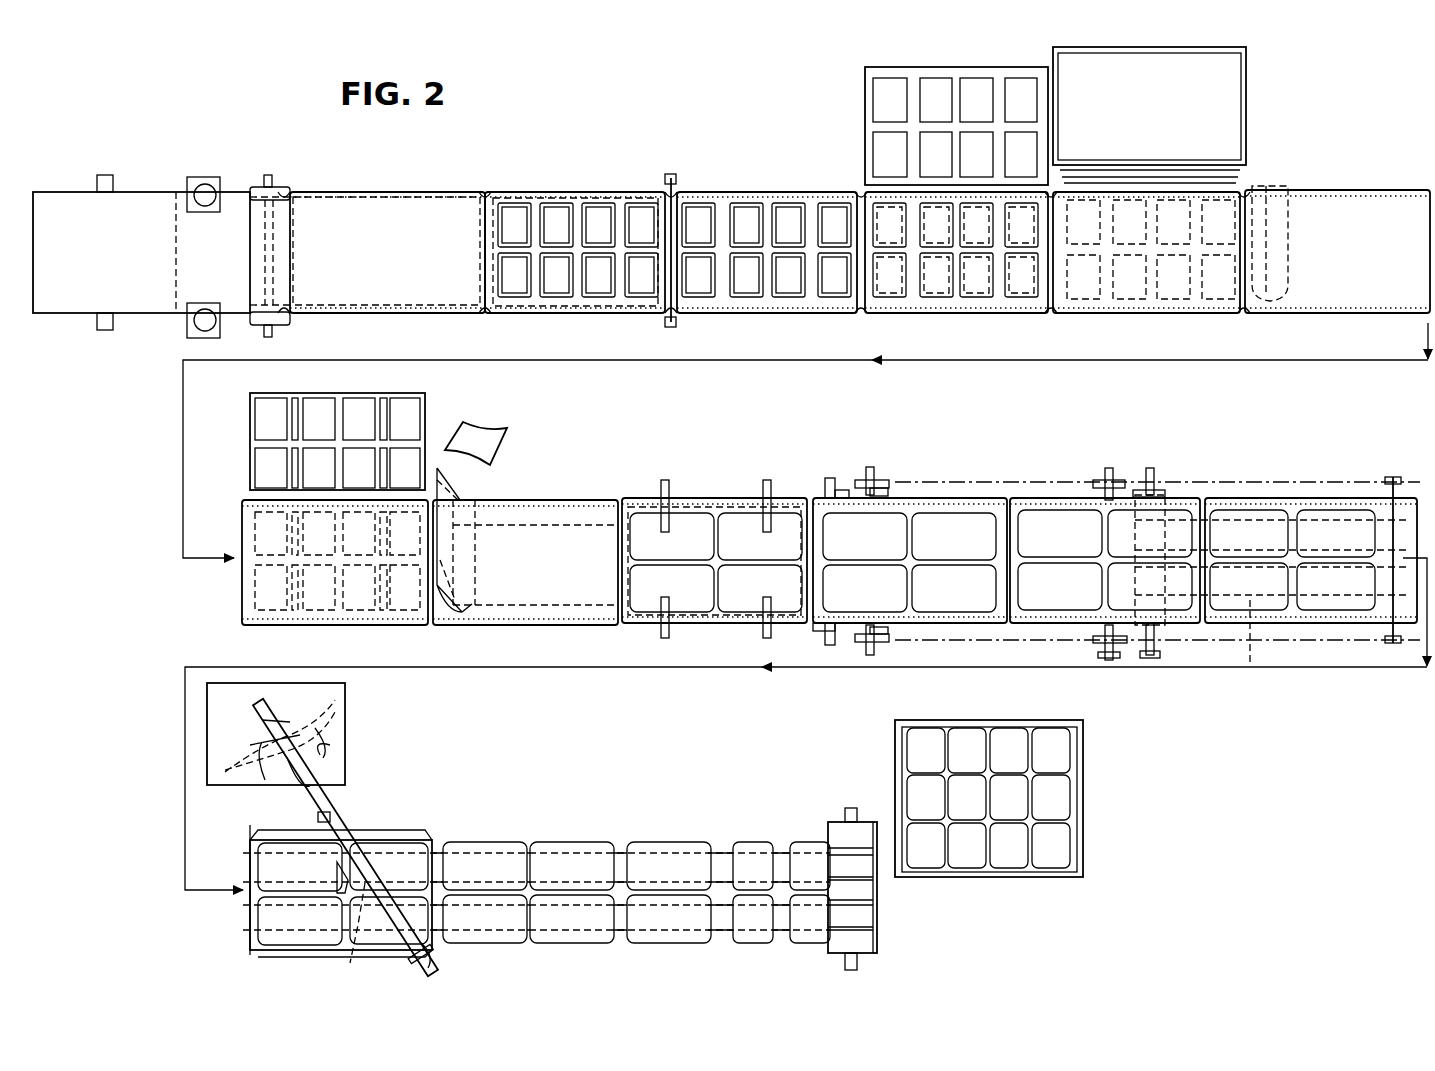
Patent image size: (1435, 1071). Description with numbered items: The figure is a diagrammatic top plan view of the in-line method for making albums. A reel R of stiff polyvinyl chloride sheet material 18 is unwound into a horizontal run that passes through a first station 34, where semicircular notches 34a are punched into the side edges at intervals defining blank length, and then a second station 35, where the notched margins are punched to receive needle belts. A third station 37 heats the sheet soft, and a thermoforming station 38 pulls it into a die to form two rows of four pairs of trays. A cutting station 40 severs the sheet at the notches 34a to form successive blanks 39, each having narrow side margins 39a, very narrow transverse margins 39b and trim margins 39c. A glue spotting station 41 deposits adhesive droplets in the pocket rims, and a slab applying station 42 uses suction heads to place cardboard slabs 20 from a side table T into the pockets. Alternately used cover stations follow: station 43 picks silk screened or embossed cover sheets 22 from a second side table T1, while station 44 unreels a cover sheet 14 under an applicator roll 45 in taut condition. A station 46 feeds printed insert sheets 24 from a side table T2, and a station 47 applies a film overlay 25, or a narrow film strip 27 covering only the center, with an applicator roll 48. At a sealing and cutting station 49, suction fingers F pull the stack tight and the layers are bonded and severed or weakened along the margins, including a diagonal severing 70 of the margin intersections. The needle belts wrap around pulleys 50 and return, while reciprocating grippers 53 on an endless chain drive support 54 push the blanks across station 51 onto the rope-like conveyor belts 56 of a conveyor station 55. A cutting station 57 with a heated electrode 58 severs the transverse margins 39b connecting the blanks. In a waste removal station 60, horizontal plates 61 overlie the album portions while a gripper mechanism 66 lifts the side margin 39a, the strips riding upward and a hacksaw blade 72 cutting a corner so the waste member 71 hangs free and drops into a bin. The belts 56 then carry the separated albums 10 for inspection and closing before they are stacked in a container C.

The album 10 is at (494, 881).
The cover sheet 14 is at (1249, 185).
The polyvinyl chloride sheet material 18 is at (233, 273).
The cardboard slab 20 is at (1031, 168).
The cover sheet 22 is at (1168, 141).
The printed insert sheet 24 is at (318, 402).
The film overlay 25 is at (568, 500).
The narrow film strip 27 is at (500, 434).
The first station 34 is at (208, 190).
The semicircular notch 34a is at (288, 188).
The second station 35 is at (268, 188).
The third station 37 is at (368, 215).
The thermoforming station 38 is at (562, 190).
The blank 39 is at (783, 312).
The side margin 39a is at (297, 957).
The transverse margin 39b is at (250, 938).
The trim margin 39c is at (260, 897).
The cutting station 40 is at (678, 326).
The glue spotting station 41 is at (704, 192).
The cardboard slab applying station 42 is at (975, 315).
The cover applying station 43 is at (1135, 315).
The cover applying station 44 is at (1338, 315).
The applicator roll 45 is at (1293, 217).
The insert sheet feeding station 46 is at (238, 597).
The film applying station 47 is at (508, 500).
The applicator roll 48 is at (477, 562).
The sealing and cutting station 49 is at (702, 495).
The pulley 50 is at (818, 495).
The transfer station 51 is at (940, 478).
The reciprocating gripper 53 is at (878, 483).
The endless chain drive support 54 is at (975, 485).
The conveyor station 55 is at (1290, 496).
The conveyor belt 56 is at (1236, 518).
The cutting station 57 is at (1405, 540).
The heated electrode 58 is at (1393, 554).
The waste removal station 60 is at (345, 815).
The horizontal plate 61 is at (374, 935).
The gripper mechanism 66 is at (436, 958).
The diagonal severing 70 is at (343, 885).
The waste member 71 is at (335, 745).
The hacksaw blade 72 is at (323, 833).
The reel R is at (80, 300).
The side table T is at (862, 65).
The second side table T1 is at (1248, 65).
The side table T2 is at (426, 395).
The suction finger F is at (663, 482).
The container C is at (1084, 790).